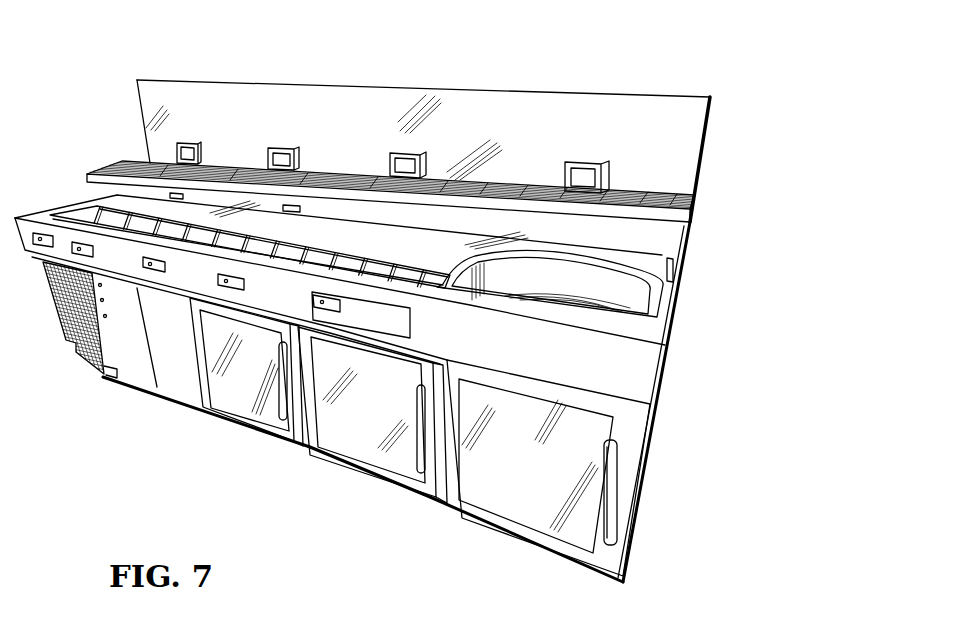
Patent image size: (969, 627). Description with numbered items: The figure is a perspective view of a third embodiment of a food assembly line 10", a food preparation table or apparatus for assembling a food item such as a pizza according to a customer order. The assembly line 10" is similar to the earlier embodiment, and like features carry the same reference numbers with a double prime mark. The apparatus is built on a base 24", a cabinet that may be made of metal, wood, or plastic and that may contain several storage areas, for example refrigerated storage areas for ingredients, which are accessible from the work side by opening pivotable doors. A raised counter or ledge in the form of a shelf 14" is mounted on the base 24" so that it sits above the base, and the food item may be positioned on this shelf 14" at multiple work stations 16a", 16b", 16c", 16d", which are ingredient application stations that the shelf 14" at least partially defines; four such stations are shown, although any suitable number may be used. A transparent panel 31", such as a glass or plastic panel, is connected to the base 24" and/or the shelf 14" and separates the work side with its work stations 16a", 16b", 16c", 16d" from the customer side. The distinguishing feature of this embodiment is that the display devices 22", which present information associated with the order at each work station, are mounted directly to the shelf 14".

The food assembly line 10 is at (760, 152).
The shelf 14 is at (700, 208).
The work station 16a is at (656, 185).
The work station 16b is at (439, 175).
The work station 16c is at (312, 170).
The work station 16d is at (215, 160).
The display device 22 is at (208, 143).
The base 24 is at (642, 380).
The transparent panel 31 is at (542, 94).